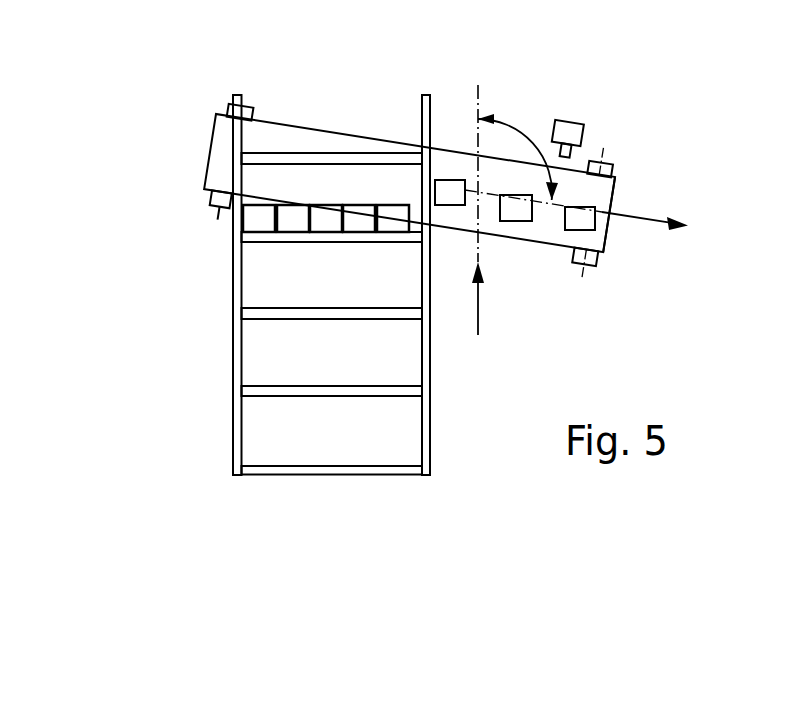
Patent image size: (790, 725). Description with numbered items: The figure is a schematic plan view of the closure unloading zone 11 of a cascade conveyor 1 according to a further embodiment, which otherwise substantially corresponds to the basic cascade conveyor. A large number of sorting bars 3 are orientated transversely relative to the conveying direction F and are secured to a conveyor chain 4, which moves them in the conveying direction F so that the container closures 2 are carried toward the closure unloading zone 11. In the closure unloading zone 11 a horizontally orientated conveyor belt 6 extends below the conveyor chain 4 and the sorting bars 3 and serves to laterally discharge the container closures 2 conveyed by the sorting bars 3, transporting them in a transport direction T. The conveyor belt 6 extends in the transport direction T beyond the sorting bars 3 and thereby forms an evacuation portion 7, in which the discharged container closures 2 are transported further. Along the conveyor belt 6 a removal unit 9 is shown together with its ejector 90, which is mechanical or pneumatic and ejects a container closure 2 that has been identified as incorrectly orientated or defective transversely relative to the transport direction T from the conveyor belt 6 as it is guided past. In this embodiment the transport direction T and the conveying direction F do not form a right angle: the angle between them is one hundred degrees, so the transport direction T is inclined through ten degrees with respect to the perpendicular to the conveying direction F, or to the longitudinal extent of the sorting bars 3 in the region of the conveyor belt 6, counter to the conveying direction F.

The cascade conveyor 1 is at (152, 88).
The closure unloading zone 11 is at (148, 162).
The container closures 2 is at (262, 222).
The sorting bars 3 is at (318, 470).
The conveyor chain 4 is at (235, 333).
The conveyor belt 6 is at (600, 192).
The evacuation portion 7 is at (514, 70).
The removal unit 9 is at (573, 117).
The ejector 90 is at (567, 160).
The transport direction T is at (643, 212).
The conveying direction F is at (478, 317).